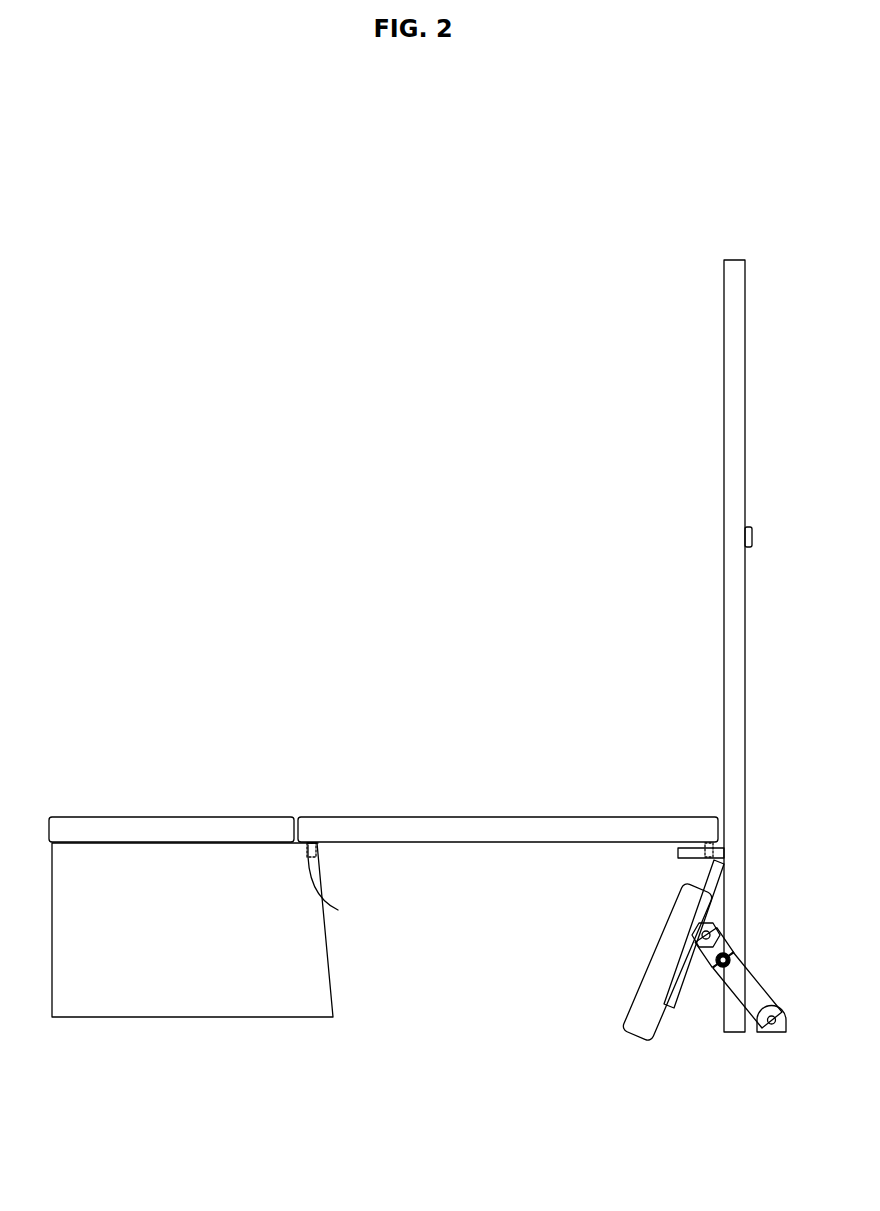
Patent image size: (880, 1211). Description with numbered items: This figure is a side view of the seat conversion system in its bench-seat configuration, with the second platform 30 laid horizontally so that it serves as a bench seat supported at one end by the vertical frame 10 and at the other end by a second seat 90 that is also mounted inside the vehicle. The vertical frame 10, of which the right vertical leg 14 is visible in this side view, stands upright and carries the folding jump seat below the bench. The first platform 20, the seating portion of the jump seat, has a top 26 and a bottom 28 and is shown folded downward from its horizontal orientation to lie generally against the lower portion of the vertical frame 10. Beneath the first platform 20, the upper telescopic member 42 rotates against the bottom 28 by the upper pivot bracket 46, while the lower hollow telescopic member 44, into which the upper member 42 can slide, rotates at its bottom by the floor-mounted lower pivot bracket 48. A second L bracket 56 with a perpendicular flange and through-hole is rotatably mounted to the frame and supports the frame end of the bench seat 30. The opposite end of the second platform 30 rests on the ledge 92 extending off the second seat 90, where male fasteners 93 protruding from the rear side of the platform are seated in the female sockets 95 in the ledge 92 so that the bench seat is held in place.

The first vertical frame 10 is at (736, 646).
The right vertical leg 14 is at (737, 462).
The first platform 20 is at (695, 955).
The top 26 is at (632, 1006).
The bottom 28 is at (682, 990).
The second platform 30 is at (560, 810).
The upper telescopic member 42 is at (762, 997).
The lower telescopic member 44 is at (762, 997).
The upper pivot bracket 46 is at (730, 912).
The lower pivot bracket 48 is at (772, 1028).
The second L bracket 56 is at (690, 856).
The second seat 90 is at (80, 917).
The ledge 92 is at (335, 883).
The male fasteners 93 is at (318, 856).
The sockets 95 is at (312, 843).